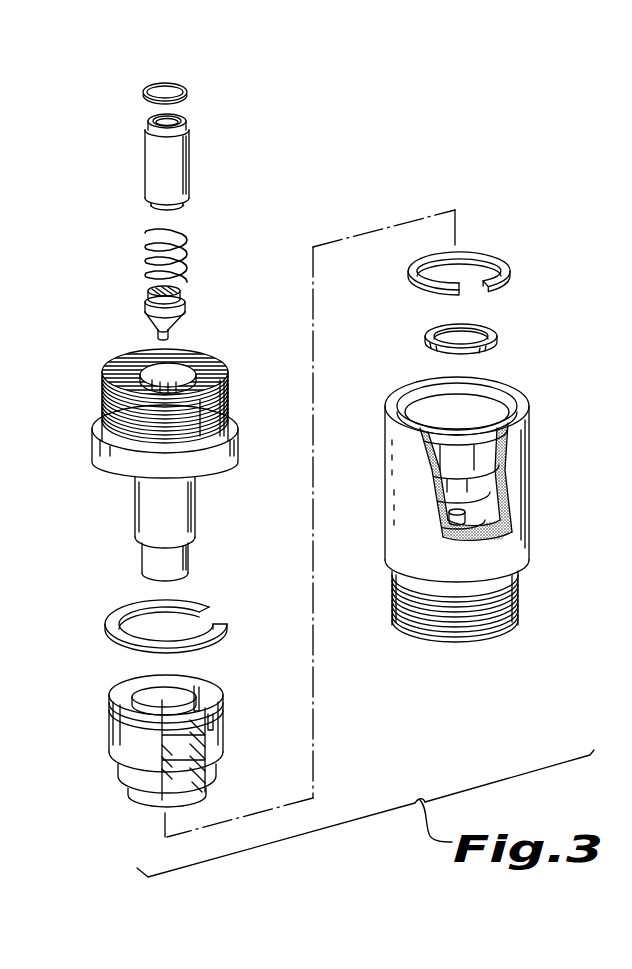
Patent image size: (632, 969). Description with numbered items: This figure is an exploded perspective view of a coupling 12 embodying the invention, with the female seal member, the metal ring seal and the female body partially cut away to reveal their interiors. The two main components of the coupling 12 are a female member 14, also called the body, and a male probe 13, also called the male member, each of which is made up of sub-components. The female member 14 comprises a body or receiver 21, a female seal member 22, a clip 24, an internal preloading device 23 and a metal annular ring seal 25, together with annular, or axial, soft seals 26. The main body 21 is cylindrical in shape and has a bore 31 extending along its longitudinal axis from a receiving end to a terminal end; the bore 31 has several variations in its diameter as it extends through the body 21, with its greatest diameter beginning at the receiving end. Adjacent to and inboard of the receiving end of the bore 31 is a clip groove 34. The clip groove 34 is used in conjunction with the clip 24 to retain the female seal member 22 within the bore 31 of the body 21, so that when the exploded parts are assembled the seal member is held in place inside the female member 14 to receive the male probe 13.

The coupling 12 is at (472, 189).
The male probe 13 is at (95, 452).
The female member 14 is at (478, 469).
The body 21 is at (508, 557).
The female seal member 22 is at (110, 725).
The internal preloading device 23 is at (497, 338).
The clip 24 is at (107, 625).
The metal annular ring seal 25 is at (512, 278).
The soft seals 26 is at (197, 703).
The bore 31 is at (485, 418).
The clip groove 34 is at (407, 401).